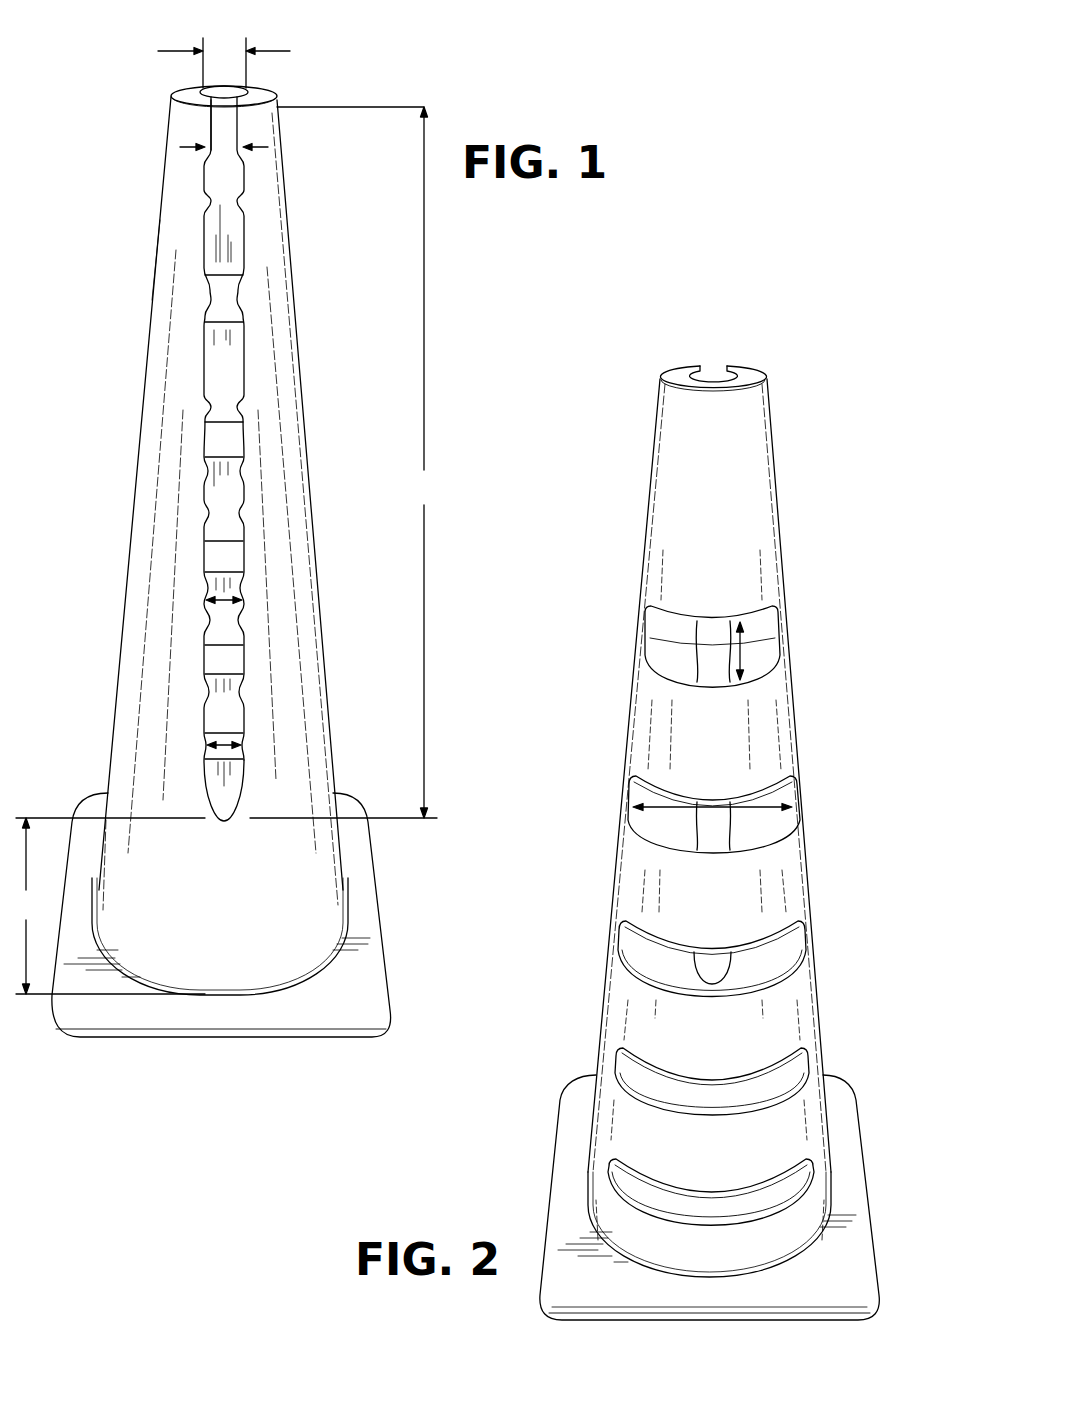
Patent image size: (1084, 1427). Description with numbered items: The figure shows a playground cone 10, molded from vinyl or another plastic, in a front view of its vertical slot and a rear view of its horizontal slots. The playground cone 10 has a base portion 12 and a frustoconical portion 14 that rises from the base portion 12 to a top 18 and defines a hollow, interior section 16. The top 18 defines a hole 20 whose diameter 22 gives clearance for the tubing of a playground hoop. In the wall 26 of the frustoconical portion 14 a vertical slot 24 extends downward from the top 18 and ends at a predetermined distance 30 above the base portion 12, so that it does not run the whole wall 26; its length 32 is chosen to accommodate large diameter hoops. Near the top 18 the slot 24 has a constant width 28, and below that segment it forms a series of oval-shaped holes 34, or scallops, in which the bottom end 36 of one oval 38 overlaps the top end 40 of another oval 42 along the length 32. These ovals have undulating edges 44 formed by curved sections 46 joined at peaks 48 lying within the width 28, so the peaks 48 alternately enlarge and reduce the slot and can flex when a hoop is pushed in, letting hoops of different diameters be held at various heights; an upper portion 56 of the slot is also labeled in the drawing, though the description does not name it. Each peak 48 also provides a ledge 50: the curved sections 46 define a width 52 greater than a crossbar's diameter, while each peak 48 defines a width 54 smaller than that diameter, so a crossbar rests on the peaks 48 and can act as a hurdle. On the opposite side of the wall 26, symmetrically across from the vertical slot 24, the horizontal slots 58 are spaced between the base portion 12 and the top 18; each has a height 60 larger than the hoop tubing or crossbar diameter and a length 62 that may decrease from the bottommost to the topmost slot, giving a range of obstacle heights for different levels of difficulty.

In FIG. 1, the playground cone 10 is at (132, 397).
In FIG. 2, the playground cone 10 is at (793, 449).
In FIG. 1, the base portion 12 is at (348, 985).
In FIG. 2, the base portion 12 is at (570, 1163).
In FIG. 1, the frustoconical portion 14 is at (137, 583).
In FIG. 2, the frustoconical portion 14 is at (672, 500).
In FIG. 1, the hollow, interior section 16 is at (226, 120).
In FIG. 1, the top 18 is at (190, 96).
In FIG. 2, the top 18 is at (683, 377).
In FIG. 1, the hole 20 is at (226, 92).
In FIG. 1, the diameter 22 is at (277, 50).
In FIG. 1, the vertical slot 24 is at (210, 128).
In FIG. 2, the vertical slot 24 is at (640, 645).
In FIG. 1, the wall 26 is at (188, 228).
In FIG. 2, the wall 26 is at (655, 553).
In FIG. 1, the width 28 is at (193, 150).
In FIG. 1, the predetermined distance 30 is at (226, 906).
In FIG. 1, the length 32 is at (357, 462).
In FIG. 1, the oval-shaped holes 34 is at (196, 437).
In FIG. 1, the bottom end 36 is at (205, 508).
In FIG. 1, the oval 38 is at (203, 480).
In FIG. 1, the top end 40 is at (203, 532).
In FIG. 1, the another oval 42 is at (203, 552).
In FIG. 1, the undulating edges 44 is at (203, 385).
In FIG. 1, the curved sections 46 is at (205, 370).
In FIG. 1, the peaks 48 is at (218, 348).
In FIG. 1, the ledge 50 is at (207, 698).
In FIG. 1, the width 52 is at (216, 600).
In FIG. 1, the width 54 is at (222, 745).
In FIG. 1, the upper channel portion 56 is at (252, 224).
In FIG. 2, the horizontal slots 58 is at (748, 596).
In FIG. 2, the height 60 is at (778, 647).
In FIG. 2, the length 62 is at (762, 808).